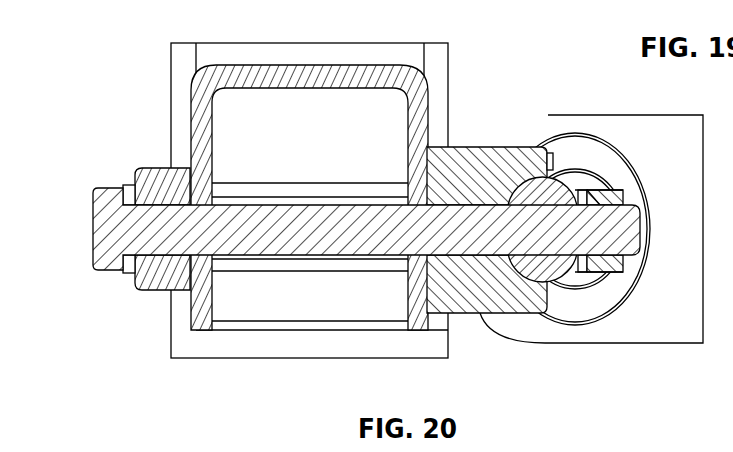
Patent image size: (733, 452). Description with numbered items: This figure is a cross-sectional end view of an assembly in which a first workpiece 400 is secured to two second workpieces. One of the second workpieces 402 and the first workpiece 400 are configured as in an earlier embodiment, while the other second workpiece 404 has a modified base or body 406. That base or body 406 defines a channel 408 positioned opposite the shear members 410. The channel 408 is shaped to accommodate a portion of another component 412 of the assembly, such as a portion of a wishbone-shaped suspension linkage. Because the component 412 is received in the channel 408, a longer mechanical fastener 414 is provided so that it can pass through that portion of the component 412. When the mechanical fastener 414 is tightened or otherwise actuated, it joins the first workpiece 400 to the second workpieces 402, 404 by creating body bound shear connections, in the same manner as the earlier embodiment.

In FIG. 20, the first workpiece 400 is at (331, 73).
In FIG. 20, the second workpiece 402 is at (137, 172).
In FIG. 20, the second workpiece 404 is at (468, 143).
In FIG. 20, the base or body 406 is at (517, 152).
In FIG. 20, the channel 408 is at (537, 268).
In FIG. 19, the channel 408 is at (633, 9).
In FIG. 20, the shear members 410 is at (430, 315).
In FIG. 20, the component 412 is at (564, 183).
In FIG. 20, the mechanical fastener 414 is at (93, 228).